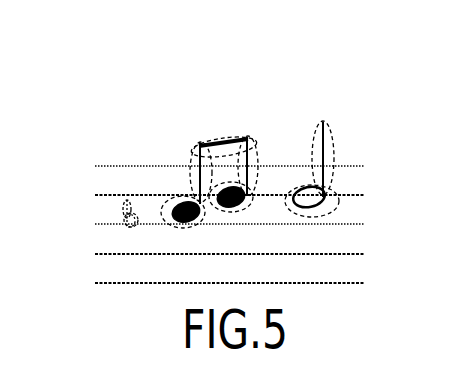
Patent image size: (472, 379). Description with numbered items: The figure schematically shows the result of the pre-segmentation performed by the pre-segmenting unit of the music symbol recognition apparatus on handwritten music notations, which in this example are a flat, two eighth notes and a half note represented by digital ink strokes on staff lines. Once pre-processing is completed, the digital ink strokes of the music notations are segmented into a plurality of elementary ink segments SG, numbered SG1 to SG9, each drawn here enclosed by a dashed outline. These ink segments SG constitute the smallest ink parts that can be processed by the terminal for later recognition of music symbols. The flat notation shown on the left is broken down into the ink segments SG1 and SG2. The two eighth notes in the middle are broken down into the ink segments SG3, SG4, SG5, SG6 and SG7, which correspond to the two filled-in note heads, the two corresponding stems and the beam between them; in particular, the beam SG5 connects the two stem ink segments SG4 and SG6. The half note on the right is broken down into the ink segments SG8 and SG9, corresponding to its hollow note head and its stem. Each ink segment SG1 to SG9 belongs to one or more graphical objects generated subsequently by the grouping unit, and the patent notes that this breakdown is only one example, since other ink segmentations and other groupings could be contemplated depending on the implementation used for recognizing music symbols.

The ink segments SG is at (240, 87).
The ink segment SG1 is at (120, 203).
The ink segment SG2 is at (118, 228).
The ink segment SG3 is at (183, 228).
The ink segment SG4 is at (192, 138).
The beam SG5 is at (224, 132).
The ink segment SG6 is at (248, 130).
The ink segment SG7 is at (218, 220).
The ink segment SG8 is at (322, 208).
The ink segment SG9 is at (338, 111).